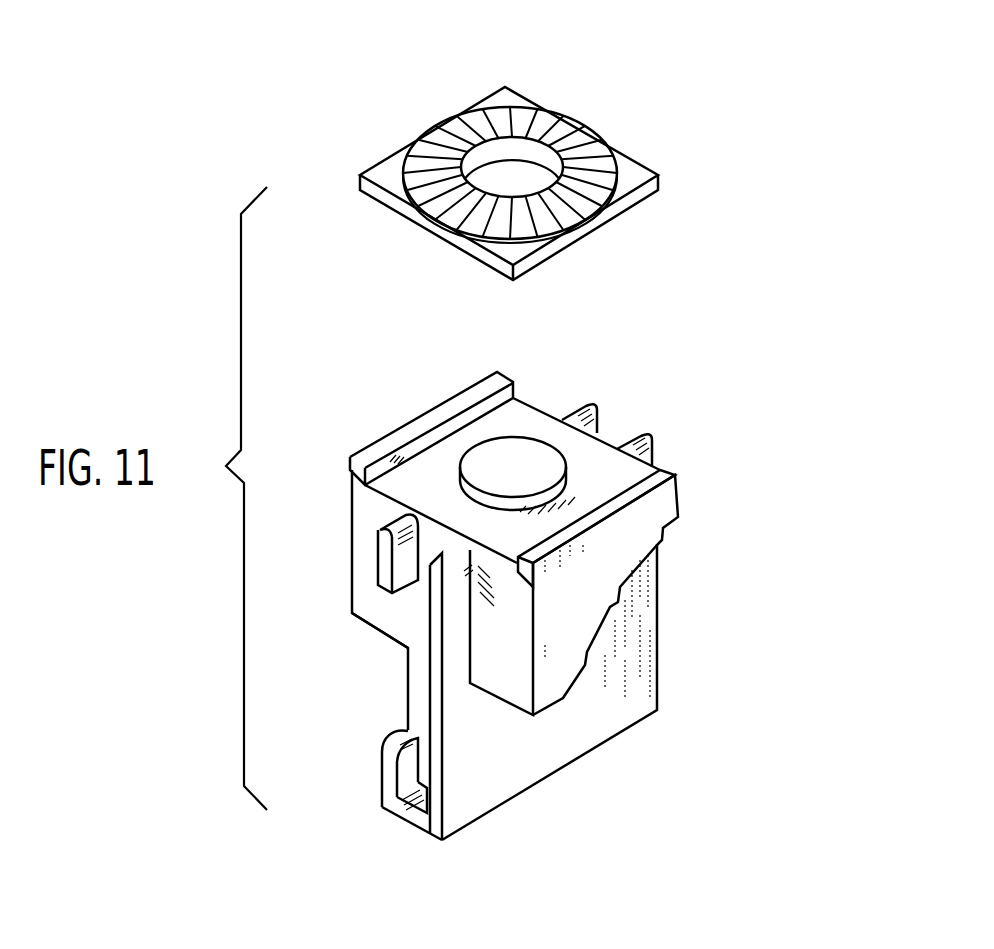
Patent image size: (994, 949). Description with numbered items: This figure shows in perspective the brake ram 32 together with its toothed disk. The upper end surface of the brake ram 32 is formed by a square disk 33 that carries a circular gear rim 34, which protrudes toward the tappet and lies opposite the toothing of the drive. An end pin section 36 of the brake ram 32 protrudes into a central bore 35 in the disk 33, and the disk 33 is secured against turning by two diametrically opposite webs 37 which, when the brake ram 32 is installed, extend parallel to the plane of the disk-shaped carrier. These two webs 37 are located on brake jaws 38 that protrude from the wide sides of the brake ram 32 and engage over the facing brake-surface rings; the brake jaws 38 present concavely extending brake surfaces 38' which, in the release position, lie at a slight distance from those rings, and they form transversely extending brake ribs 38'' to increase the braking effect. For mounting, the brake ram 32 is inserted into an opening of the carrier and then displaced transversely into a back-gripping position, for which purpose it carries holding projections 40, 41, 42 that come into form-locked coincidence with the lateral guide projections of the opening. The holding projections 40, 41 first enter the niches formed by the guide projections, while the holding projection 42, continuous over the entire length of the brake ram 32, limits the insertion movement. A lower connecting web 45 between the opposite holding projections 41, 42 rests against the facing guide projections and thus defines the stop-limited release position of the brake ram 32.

The brake ram 32 is at (546, 611).
The square disk 33 is at (638, 173).
The circular gear rim 34 is at (552, 122).
The central bore 35 is at (478, 100).
The end pin section 36 is at (532, 463).
The webs 37 is at (440, 412).
The brake jaws 38 is at (510, 655).
The concavely extending brake surfaces 38' is at (544, 627).
The brake ribs 38'' is at (679, 630).
The holding projection 40 is at (385, 548).
The holding projection 41 is at (388, 772).
The holding projection 42 is at (437, 722).
The lower connecting web 45 is at (407, 813).